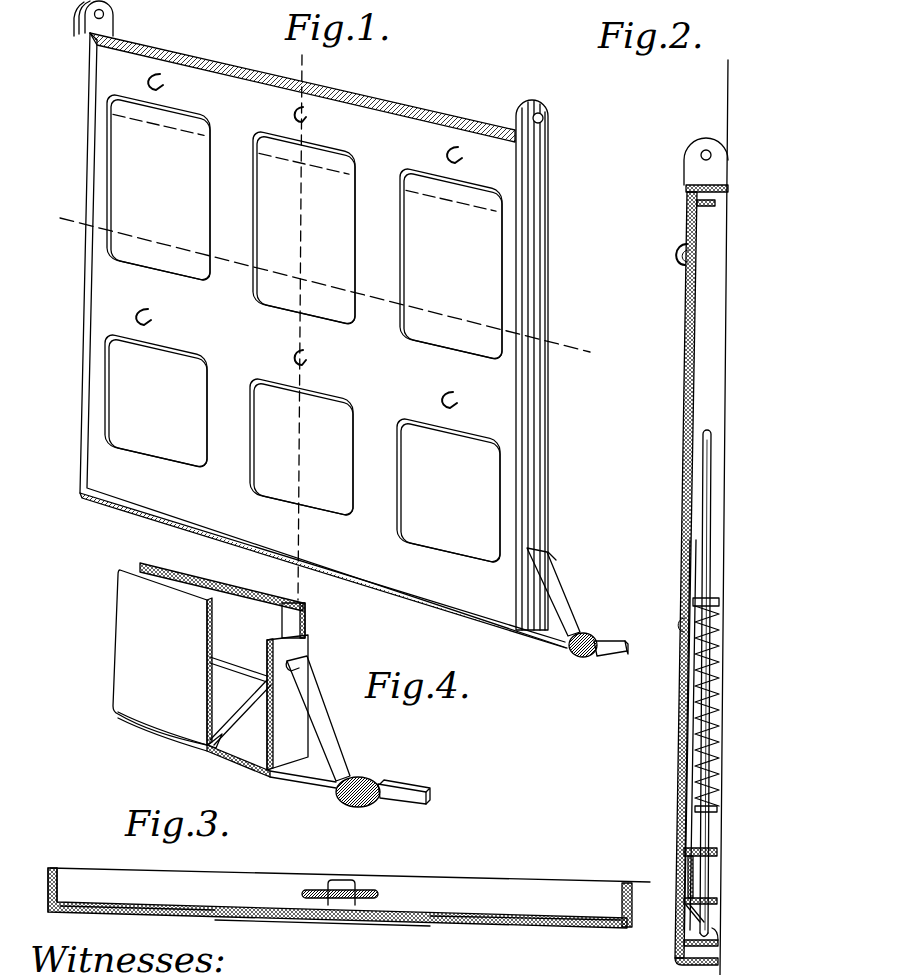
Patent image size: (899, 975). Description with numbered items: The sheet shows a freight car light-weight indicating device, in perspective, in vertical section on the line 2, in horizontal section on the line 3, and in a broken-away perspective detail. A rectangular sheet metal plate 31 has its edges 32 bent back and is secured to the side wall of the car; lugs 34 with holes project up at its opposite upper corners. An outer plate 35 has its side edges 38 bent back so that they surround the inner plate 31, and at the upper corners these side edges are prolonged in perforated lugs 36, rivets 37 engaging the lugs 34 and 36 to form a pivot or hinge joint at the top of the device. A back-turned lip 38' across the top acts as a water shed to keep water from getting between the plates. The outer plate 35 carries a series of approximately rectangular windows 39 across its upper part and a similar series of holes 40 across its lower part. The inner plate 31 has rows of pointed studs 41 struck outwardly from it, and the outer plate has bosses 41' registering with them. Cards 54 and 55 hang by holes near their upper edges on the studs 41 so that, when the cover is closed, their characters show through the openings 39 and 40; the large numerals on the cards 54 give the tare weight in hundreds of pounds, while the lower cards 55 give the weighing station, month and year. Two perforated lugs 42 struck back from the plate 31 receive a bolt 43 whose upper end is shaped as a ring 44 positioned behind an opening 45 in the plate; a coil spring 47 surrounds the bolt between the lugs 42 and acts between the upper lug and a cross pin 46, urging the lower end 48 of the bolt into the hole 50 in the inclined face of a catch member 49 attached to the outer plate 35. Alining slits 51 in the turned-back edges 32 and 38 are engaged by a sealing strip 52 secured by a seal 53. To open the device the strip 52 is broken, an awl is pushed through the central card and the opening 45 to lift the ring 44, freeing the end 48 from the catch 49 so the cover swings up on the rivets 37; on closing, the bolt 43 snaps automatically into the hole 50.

In FIG. 1, the section line 2 is at (280, 576).
In FIG. 1, the section line 3 is at (563, 345).
In FIG. 4, the sheet metal plate 31 is at (224, 670).
In FIG. 3, the sheet metal plate 31 is at (482, 904).
In FIG. 2, the sheet metal plate 31 is at (700, 282).
In FIG. 4, the edges 32 is at (302, 618).
In FIG. 3, the edges 32 is at (68, 880).
In FIG. 2, the edges 32 is at (712, 354).
In FIG. 1, the lugs 34 is at (105, 22).
In FIG. 2, the lugs 34 is at (712, 172).
In FIG. 1, the outer plate 35 is at (435, 370).
In FIG. 4, the outer plate 35 is at (162, 660).
In FIG. 3, the outer plate 35 is at (456, 914).
In FIG. 2, the outer plate 35 is at (686, 585).
In FIG. 1, the perforated lugs 36 is at (545, 100).
In FIG. 2, the perforated lugs 36 is at (684, 152).
In FIG. 1, the rivets 37 is at (545, 118).
In FIG. 2, the rivets 37 is at (711, 152).
In FIG. 3, the side edges 38 is at (40, 876).
In FIG. 1, the back-turned lip 38' is at (302, 87).
In FIG. 1, the holes or windows 39 is at (253, 232).
In FIG. 3, the holes or windows 39 is at (212, 912).
In FIG. 2, the holes or windows 39 is at (687, 330).
In FIG. 1, the holes 40 is at (252, 461).
In FIG. 2, the holes 40 is at (684, 730).
In FIG. 2, the pointed lugs or studs 41 is at (724, 245).
In FIG. 1, the bosses 41' is at (322, 244).
In FIG. 2, the bosses 41' is at (667, 439).
In FIG. 3, the lugs 42 is at (336, 878).
In FIG. 2, the lugs 42 is at (712, 605).
In FIG. 2, the bolt 43 is at (710, 575).
In FIG. 3, the ring 44 is at (378, 893).
In FIG. 2, the ring 44 is at (710, 472).
In FIG. 2, the opening 45 is at (697, 420).
In FIG. 2, the cross pin 46 is at (714, 812).
In FIG. 2, the coil spring 47 is at (712, 736).
In FIG. 2, the lower end of bolt 48 is at (710, 918).
In FIG. 2, the catch member 49 is at (721, 946).
In FIG. 2, the hole 50 is at (690, 918).
In FIG. 4, the alining slits 51 is at (216, 756).
In FIG. 1, the sealing strip 52 is at (558, 602).
In FIG. 4, the sealing strip 52 is at (332, 740).
In FIG. 1, the seal 53 is at (588, 638).
In FIG. 4, the seal 53 is at (364, 808).
In FIG. 1, the cards 54 is at (210, 195).
In FIG. 1, the lower cards 55 is at (200, 437).